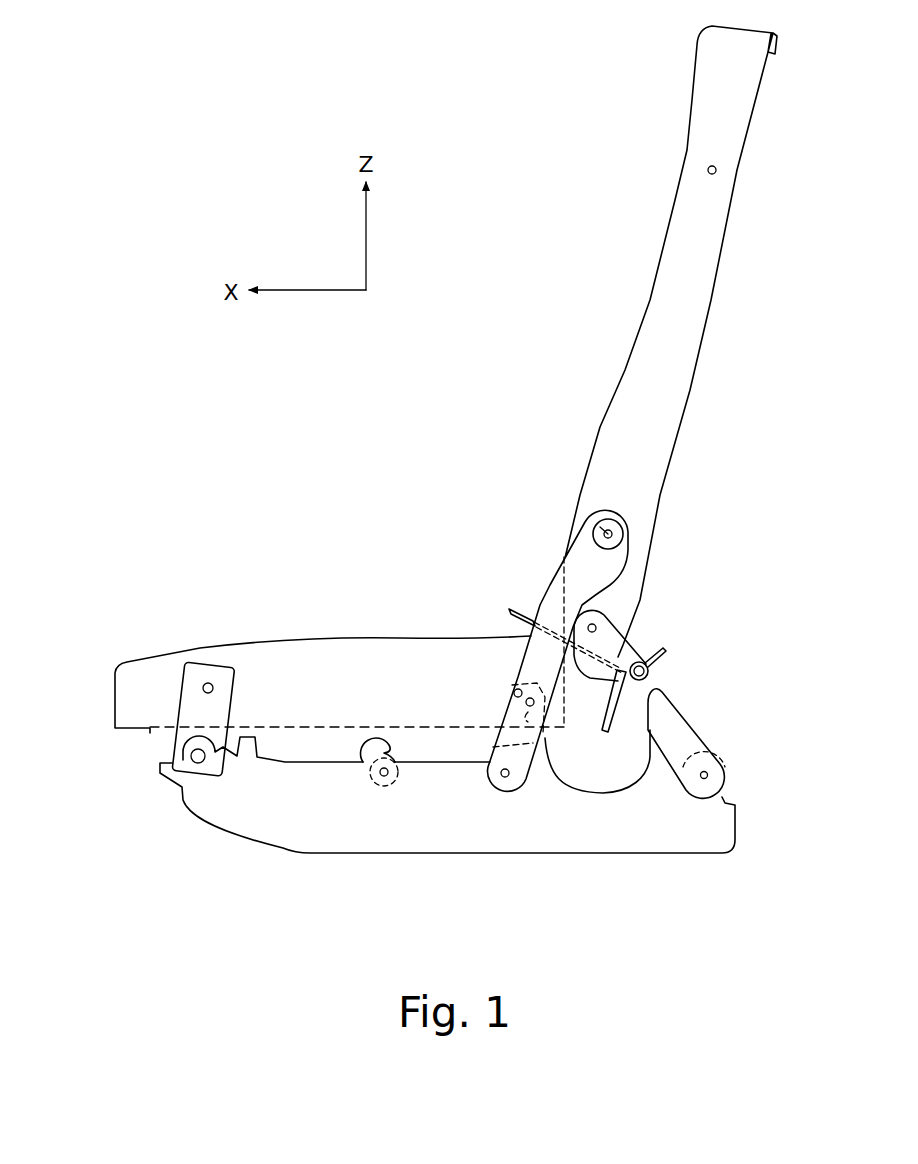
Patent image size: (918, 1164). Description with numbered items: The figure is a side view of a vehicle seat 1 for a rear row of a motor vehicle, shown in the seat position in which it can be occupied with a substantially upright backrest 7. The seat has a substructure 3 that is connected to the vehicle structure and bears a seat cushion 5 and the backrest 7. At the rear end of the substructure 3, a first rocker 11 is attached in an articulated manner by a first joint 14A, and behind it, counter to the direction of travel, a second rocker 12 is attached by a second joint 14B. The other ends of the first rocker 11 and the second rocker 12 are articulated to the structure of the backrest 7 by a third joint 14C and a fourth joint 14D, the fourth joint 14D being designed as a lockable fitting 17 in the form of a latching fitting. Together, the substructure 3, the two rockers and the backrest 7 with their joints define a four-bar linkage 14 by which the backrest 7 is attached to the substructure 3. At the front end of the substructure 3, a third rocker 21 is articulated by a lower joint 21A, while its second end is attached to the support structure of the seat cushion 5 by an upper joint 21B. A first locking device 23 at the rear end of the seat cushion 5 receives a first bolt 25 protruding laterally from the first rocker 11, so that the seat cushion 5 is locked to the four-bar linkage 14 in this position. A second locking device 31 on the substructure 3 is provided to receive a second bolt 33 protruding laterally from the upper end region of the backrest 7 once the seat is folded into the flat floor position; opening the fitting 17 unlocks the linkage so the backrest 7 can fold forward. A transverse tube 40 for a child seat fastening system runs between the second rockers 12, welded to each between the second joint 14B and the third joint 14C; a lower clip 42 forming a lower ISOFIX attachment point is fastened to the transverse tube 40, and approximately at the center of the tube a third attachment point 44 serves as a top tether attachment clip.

The vehicle seat 1 is at (381, 501).
The substructure 3 is at (403, 852).
The seat cushion 5 is at (380, 675).
The backrest 7 is at (607, 425).
The first rocker 11 is at (548, 610).
The second rocker 12 is at (657, 688).
The four-bar linkage 14 is at (638, 746).
The first joint 14A is at (503, 778).
The second joint 14B is at (708, 775).
The third joint 14C is at (597, 626).
The fourth joint 14D is at (592, 520).
The lockable fitting 17 is at (622, 522).
The third rocker 21 is at (178, 742).
The lower joint 21A is at (198, 763).
The upper joint 21B is at (209, 683).
The first locking device 23 is at (515, 688).
The first bolt 25 is at (533, 706).
The second locking device 31 is at (366, 750).
The second bolt 33 is at (707, 170).
The transverse tube 40 is at (644, 661).
The lower clip 42 is at (503, 605).
The third attachment point 44 is at (672, 652).